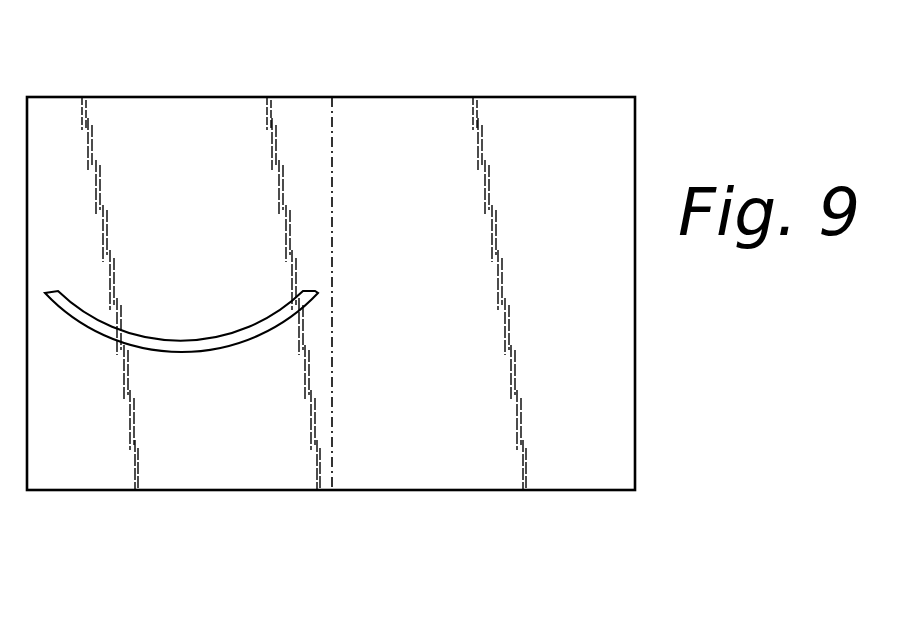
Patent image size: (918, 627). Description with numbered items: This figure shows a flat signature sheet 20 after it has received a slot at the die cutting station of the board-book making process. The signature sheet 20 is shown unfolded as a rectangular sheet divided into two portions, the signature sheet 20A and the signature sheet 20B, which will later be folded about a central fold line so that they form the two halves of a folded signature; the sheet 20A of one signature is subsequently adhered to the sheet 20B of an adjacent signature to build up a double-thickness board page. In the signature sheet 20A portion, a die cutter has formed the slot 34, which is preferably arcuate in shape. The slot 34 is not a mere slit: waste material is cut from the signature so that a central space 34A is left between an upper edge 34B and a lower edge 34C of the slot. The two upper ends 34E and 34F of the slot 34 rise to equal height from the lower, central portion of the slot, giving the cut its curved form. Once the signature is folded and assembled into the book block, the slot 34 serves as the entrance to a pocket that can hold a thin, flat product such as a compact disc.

The flat signature sheet 20 is at (385, 491).
The signature sheet 20A is at (535, 118).
The signature sheet 20B is at (190, 125).
The slot 34 is at (172, 342).
The central space 34A is at (131, 334).
The upper edge 34B is at (255, 326).
The lower edge 34C is at (207, 353).
The upper end 34E is at (50, 290).
The upper end 34F is at (308, 292).